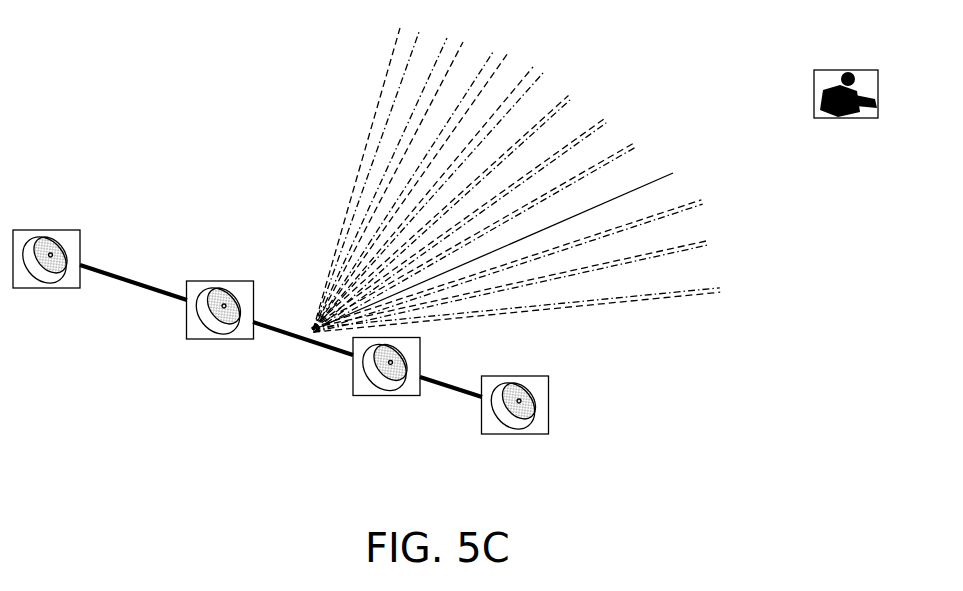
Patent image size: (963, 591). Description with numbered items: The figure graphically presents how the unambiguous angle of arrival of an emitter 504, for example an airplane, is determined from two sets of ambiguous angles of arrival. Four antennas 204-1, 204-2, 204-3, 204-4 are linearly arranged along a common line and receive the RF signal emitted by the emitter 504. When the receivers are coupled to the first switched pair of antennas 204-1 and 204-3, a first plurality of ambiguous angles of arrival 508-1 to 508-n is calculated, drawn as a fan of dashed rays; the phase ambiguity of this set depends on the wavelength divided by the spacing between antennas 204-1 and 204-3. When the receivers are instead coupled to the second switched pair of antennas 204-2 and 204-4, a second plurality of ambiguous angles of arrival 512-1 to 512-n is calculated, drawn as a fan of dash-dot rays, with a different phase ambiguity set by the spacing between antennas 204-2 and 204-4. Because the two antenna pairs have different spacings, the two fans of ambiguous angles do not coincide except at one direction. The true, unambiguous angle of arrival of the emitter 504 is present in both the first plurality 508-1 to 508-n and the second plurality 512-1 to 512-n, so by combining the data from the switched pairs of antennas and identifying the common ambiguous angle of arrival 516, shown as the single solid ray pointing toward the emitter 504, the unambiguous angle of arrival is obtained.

The antenna 204-1 is at (549, 407).
The antenna 204-2 is at (386, 397).
The antenna 204-3 is at (219, 281).
The antenna 204-4 is at (45, 230).
The emitter 504 is at (846, 120).
The ambiguous angle of arrival 508-1 is at (706, 296).
The ambiguous angle of arrival 508-n is at (394, 47).
The ambiguous angle of arrival 512-1 is at (711, 283).
The ambiguous angle of arrival 512-n is at (418, 34).
The common ambiguous angle of arrival 516 is at (669, 173).